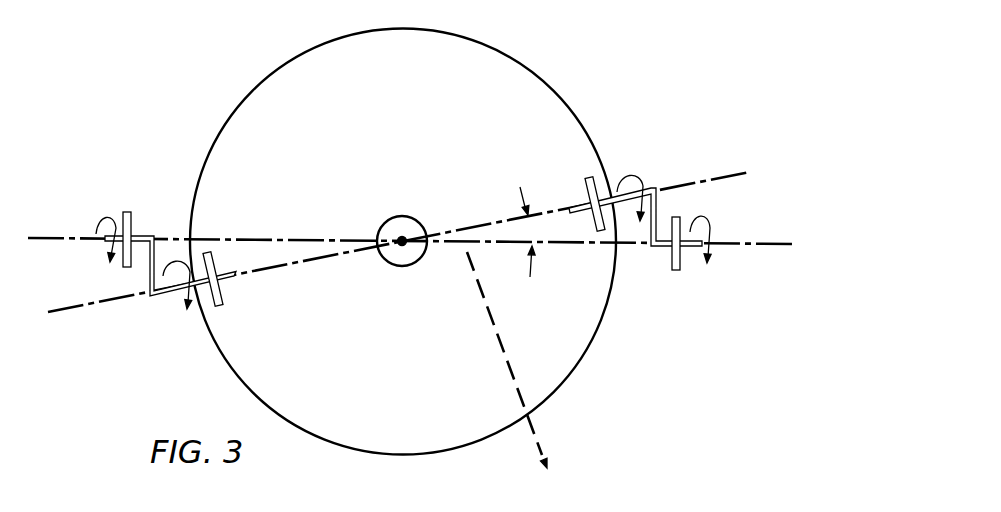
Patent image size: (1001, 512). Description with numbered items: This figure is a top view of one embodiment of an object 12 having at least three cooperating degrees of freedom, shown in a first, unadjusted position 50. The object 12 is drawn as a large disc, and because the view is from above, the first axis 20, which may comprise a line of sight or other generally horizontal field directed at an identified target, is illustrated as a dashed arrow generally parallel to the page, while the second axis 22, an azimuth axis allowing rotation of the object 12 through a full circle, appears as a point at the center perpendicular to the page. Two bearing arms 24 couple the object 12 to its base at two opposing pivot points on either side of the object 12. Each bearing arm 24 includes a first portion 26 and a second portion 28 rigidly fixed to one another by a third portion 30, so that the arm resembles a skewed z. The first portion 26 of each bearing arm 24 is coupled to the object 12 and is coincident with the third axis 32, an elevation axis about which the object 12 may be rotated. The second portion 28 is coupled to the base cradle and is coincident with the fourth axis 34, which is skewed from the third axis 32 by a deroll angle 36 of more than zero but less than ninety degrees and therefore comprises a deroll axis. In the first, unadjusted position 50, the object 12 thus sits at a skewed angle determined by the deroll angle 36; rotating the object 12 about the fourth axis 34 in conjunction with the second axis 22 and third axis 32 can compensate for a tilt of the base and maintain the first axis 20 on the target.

The object 12 is at (415, 146).
The first axis 20 is at (502, 357).
The second axis 22 is at (403, 250).
The bearing arms 24 is at (118, 186).
The first portion 26 is at (163, 293).
The second portion 28 is at (142, 233).
The third portion 30 is at (143, 282).
The third axis 32 is at (727, 173).
The fourth axis 34 is at (768, 246).
The deroll angle 36 is at (530, 268).
The first, unadjusted position 50 is at (140, 68).